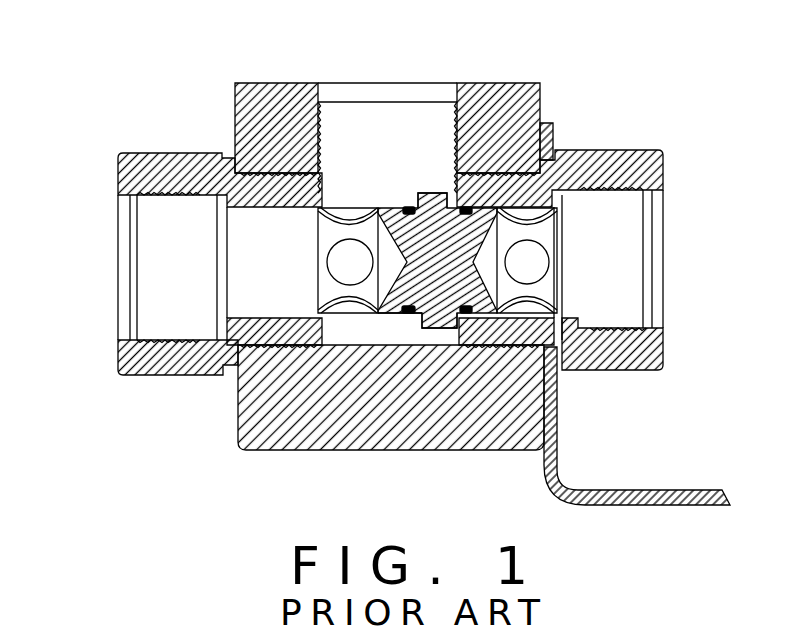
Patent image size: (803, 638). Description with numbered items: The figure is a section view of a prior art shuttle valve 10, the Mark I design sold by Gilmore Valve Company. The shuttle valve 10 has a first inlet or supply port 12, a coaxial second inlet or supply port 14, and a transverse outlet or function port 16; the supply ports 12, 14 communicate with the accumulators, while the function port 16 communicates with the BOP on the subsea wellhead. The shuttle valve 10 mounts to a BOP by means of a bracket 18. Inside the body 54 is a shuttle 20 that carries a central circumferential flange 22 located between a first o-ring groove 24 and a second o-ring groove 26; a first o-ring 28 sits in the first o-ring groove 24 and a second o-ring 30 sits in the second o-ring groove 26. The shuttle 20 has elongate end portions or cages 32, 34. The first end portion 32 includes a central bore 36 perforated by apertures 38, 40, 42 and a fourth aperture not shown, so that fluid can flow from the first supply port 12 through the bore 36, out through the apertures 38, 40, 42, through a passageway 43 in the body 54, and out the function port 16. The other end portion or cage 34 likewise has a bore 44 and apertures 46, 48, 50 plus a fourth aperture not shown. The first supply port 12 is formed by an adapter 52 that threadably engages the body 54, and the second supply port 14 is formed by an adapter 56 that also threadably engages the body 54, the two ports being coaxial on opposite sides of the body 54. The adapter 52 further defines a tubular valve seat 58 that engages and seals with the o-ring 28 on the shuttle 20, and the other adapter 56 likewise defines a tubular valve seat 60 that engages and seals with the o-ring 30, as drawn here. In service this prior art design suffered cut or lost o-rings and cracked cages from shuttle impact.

The shuttle valve 10 is at (178, 78).
The first inlet or supply port 12 is at (158, 321).
The second inlet or supply port 14 is at (622, 322).
The transverse outlet or function port 16 is at (344, 100).
The bracket 18 is at (655, 488).
The shuttle 20 is at (431, 290).
The central circumferential flange 22 is at (445, 193).
The first o-ring groove 24 is at (348, 305).
The second o-ring groove 26 is at (437, 262).
The first o-ring 28 is at (412, 205).
The second o-ring 30 is at (466, 100).
The first end portion or cage 32 is at (135, 158).
The second end portion or cage 34 is at (565, 228).
The central bore 36 is at (320, 262).
The aperture 38 is at (292, 103).
The aperture 40 is at (320, 232).
The aperture 42 is at (243, 447).
The passageway 43 is at (400, 290).
The bore 44 is at (550, 285).
The aperture 46 is at (546, 128).
The aperture 48 is at (556, 242).
The aperture 50 is at (560, 356).
The adapter 52 is at (133, 376).
The body 54 is at (273, 402).
The adapter 56 is at (658, 349).
The tubular valve seat 58 is at (325, 291).
The tubular valve seat 60 is at (484, 300).